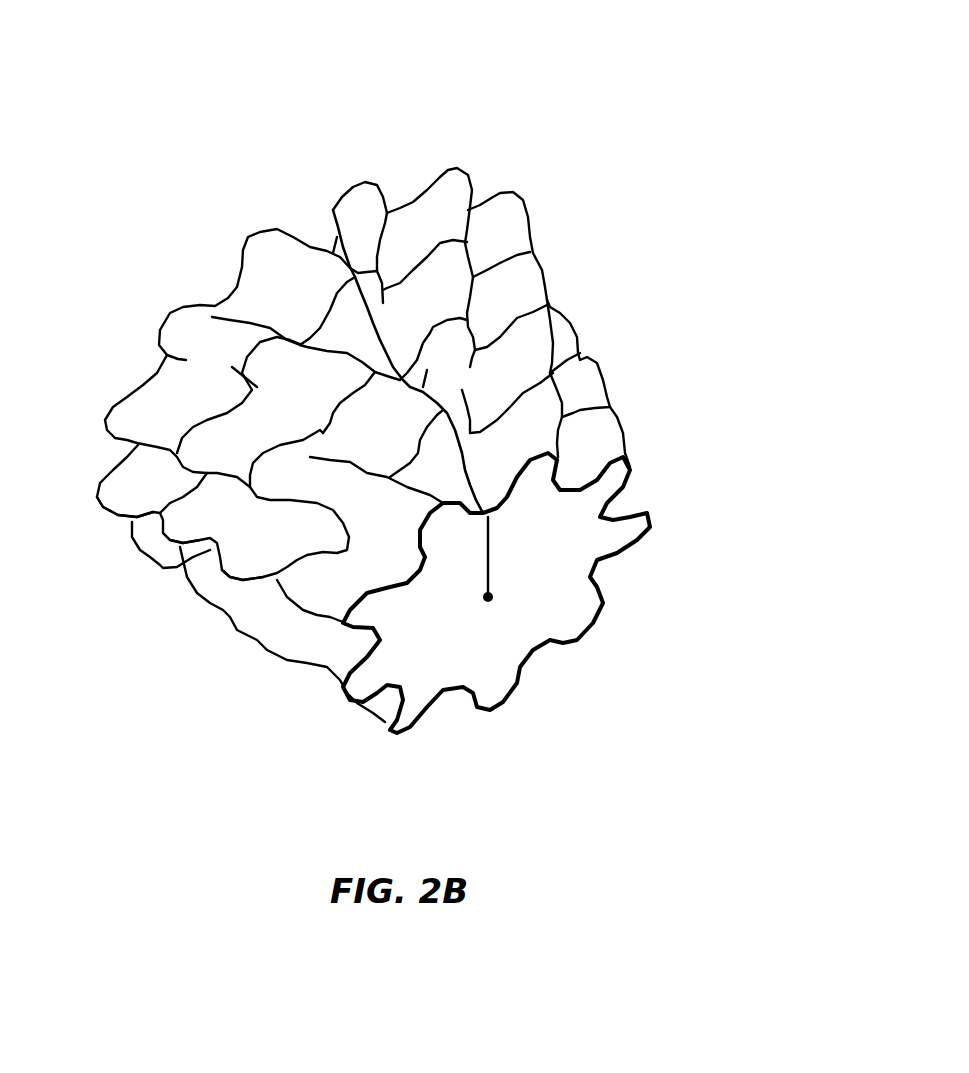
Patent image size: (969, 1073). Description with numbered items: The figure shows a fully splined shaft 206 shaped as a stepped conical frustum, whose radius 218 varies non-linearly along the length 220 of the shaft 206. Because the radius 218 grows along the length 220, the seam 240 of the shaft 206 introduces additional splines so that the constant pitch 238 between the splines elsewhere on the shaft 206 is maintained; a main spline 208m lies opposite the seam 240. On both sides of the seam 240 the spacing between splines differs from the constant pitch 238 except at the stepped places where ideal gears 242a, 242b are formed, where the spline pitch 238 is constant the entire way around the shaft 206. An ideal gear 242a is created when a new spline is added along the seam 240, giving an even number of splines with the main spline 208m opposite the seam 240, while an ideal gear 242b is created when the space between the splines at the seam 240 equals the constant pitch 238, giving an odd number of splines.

The splined shaft 206 is at (395, 72).
The main spline 208m is at (496, 618).
The radius 218 is at (588, 559).
The length 220 is at (637, 462).
The constant pitch 238 is at (248, 237).
The seam 240 is at (376, 338).
The ideal gear 242a is at (151, 590).
The ideal gear 242b is at (151, 590).